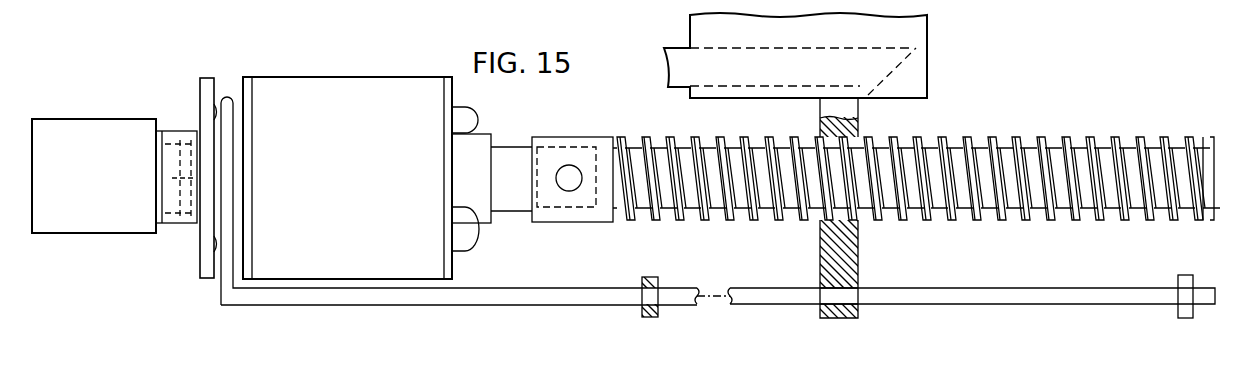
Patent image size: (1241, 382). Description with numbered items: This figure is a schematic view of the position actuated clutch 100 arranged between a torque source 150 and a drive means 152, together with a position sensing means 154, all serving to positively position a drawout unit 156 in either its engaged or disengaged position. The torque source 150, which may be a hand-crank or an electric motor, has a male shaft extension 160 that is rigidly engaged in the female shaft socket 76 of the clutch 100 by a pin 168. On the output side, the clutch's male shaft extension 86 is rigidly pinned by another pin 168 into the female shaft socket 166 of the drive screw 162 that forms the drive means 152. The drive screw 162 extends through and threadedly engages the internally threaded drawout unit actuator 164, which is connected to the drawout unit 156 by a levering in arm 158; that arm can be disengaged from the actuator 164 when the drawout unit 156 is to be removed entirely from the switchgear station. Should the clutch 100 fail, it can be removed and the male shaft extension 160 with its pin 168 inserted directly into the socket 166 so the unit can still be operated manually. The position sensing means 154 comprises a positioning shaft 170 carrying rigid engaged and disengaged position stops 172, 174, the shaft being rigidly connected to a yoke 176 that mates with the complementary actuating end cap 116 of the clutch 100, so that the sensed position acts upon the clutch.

The female shaft socket 76 is at (184, 224).
The male shaft extension 86 is at (512, 147).
The position actuated clutch 100 is at (366, 58).
The actuating end cap 116 is at (204, 78).
The torque source 150 is at (68, 119).
The drive means 152 is at (913, 125).
The position sensing means 154 is at (1007, 296).
The drawout unit 156 is at (927, 80).
The levering in arm 158 is at (900, 63).
The male shaft extension 160 is at (193, 131).
The drive screw 162 is at (1072, 137).
The drawout unit actuator 164 is at (848, 260).
The female shaft socket 166 is at (585, 213).
The pin 168 is at (185, 178).
The positioning shaft 170 is at (757, 288).
The engaged position stop 172 is at (1185, 276).
The disengaged position stop 174 is at (650, 277).
The yoke 176 is at (221, 291).